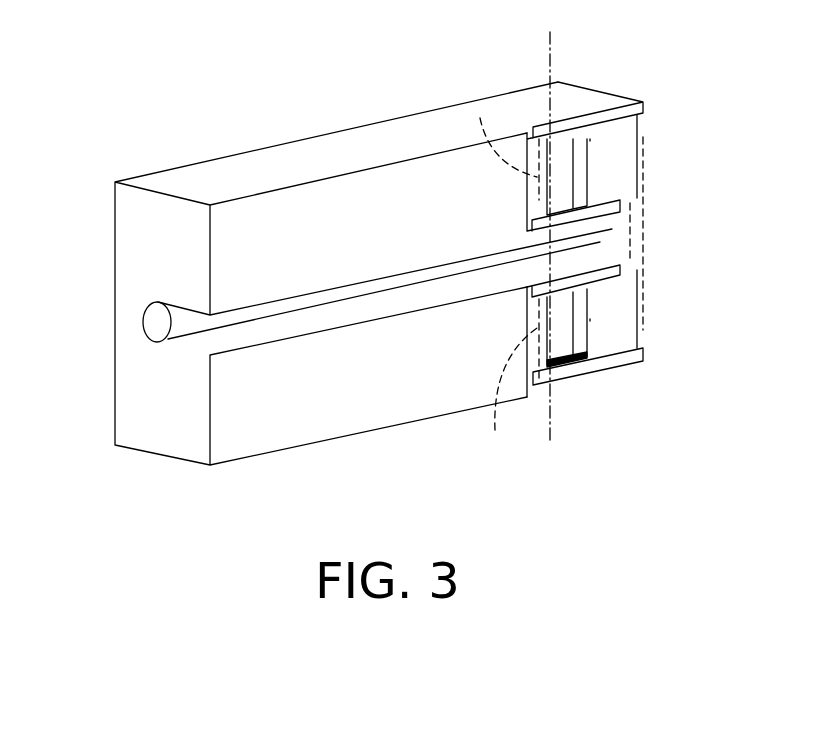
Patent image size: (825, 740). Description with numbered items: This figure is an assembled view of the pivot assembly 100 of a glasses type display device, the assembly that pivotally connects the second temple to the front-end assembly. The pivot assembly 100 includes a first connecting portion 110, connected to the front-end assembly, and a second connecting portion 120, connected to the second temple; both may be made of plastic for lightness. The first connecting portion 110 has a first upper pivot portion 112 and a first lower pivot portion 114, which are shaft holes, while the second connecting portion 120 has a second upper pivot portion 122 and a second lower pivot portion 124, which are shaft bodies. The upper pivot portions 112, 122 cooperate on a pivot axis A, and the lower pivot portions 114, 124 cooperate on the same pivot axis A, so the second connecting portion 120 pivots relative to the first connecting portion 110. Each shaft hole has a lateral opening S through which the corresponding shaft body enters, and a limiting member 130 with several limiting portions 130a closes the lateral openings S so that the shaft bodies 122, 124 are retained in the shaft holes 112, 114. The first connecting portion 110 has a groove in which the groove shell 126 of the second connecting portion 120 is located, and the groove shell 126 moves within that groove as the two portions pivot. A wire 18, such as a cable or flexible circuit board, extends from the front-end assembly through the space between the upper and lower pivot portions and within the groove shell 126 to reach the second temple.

The pivot assembly 100 is at (454, 243).
The first connecting portion 110 is at (610, 122).
The first upper pivot portion 112 is at (580, 153).
The first lower pivot portion 114 is at (580, 297).
The second connecting portion 120 is at (297, 160).
The second upper pivot portion 122 is at (560, 188).
The second lower pivot portion 124 is at (560, 340).
The groove shell 126 is at (565, 250).
The limiting member 130 is at (630, 232).
The limiting portions 130a is at (474, 104).
The wire 18 is at (337, 293).
The pivot axis A is at (548, 220).
The lateral opening S is at (588, 140).